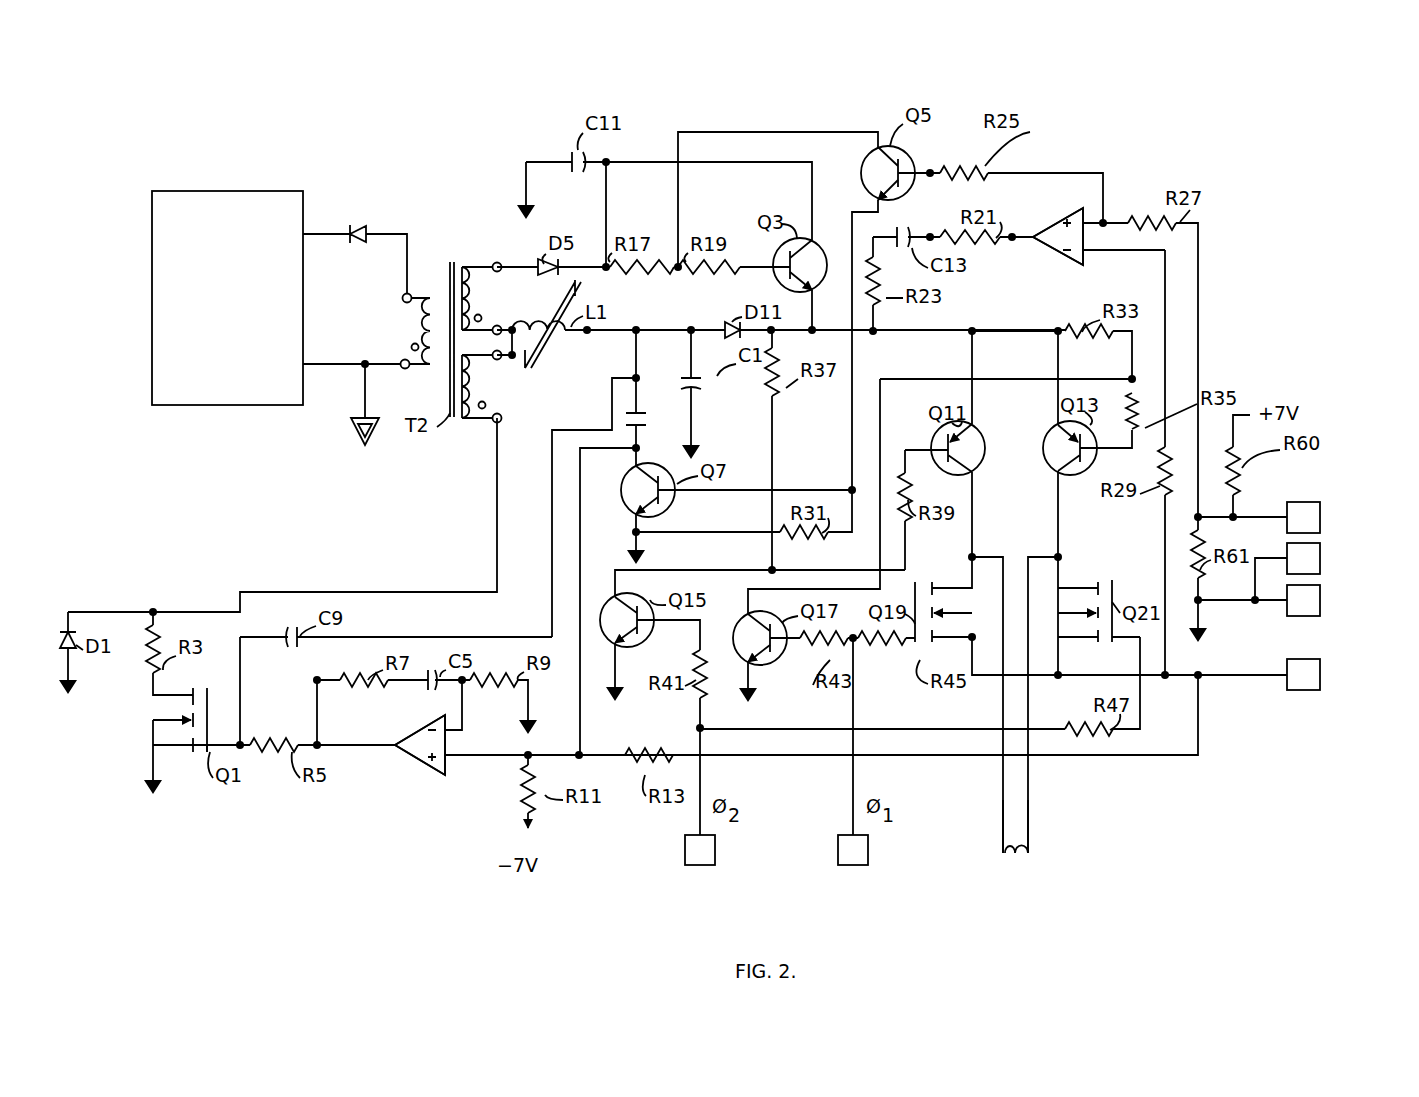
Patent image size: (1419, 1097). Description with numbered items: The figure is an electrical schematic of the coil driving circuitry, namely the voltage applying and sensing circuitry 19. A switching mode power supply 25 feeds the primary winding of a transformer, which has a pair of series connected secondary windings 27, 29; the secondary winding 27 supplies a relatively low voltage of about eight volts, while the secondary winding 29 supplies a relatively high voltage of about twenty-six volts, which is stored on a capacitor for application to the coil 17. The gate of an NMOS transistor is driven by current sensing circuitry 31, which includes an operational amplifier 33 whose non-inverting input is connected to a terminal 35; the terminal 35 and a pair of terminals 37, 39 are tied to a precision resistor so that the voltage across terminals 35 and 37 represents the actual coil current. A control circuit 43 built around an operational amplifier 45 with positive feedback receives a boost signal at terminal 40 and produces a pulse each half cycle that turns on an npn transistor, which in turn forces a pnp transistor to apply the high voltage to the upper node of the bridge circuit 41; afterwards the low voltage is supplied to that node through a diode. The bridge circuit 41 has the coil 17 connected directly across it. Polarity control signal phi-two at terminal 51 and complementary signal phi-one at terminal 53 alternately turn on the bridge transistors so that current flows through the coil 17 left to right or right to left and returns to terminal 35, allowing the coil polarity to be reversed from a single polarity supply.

The voltage applying and sensing circuitry 19 is at (235, 239).
The switching mode power supply 25 is at (286, 190).
The secondary winding 29 is at (468, 293).
The secondary winding 27 is at (460, 380).
The current sensing circuitry 31 is at (298, 796).
The operational amplifier 33 is at (452, 776).
The terminal 35 is at (1322, 678).
The terminal 37 is at (1322, 600).
The terminal 39 is at (1322, 560).
The terminal 40 is at (1322, 512).
The bridge circuit 41 is at (1011, 318).
The control circuit 43 is at (966, 163).
The operational amplifier 45 is at (1034, 266).
The terminal 51 is at (718, 866).
The terminal 53 is at (868, 866).
The coil 17 is at (1020, 862).